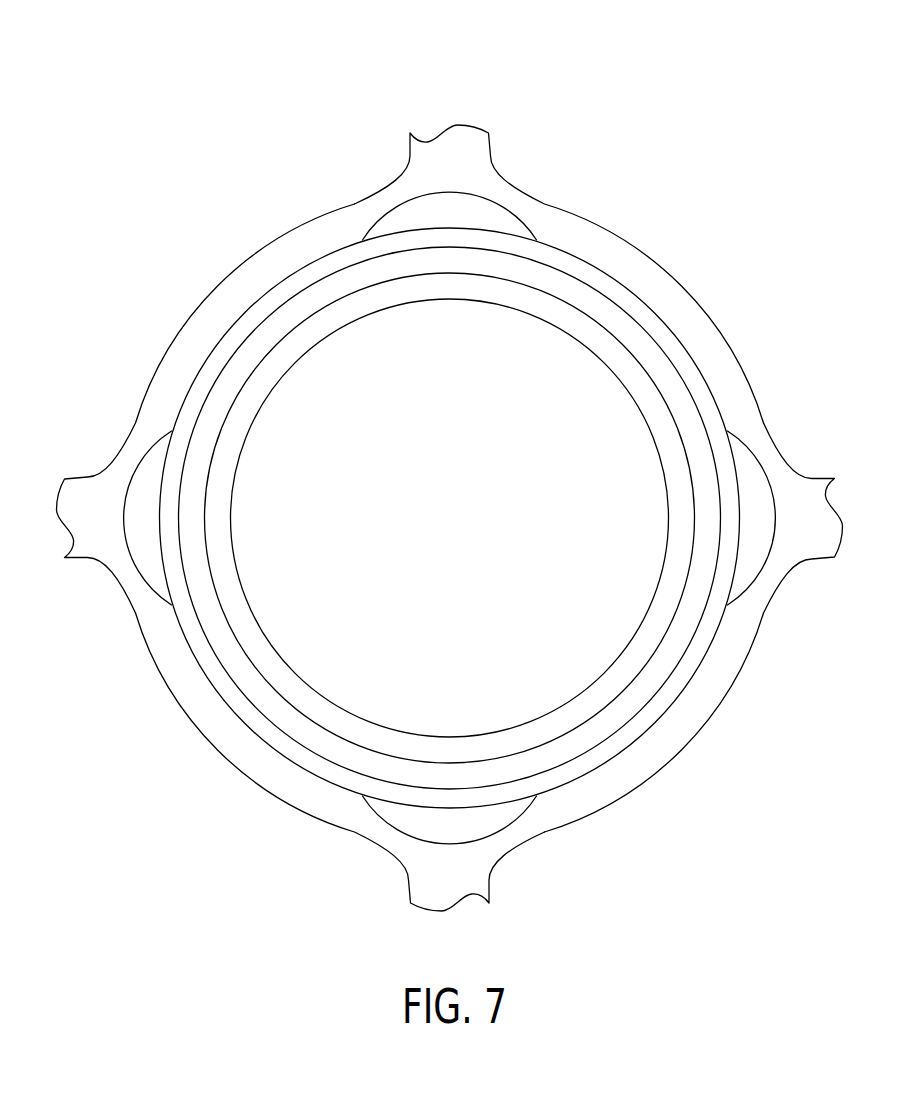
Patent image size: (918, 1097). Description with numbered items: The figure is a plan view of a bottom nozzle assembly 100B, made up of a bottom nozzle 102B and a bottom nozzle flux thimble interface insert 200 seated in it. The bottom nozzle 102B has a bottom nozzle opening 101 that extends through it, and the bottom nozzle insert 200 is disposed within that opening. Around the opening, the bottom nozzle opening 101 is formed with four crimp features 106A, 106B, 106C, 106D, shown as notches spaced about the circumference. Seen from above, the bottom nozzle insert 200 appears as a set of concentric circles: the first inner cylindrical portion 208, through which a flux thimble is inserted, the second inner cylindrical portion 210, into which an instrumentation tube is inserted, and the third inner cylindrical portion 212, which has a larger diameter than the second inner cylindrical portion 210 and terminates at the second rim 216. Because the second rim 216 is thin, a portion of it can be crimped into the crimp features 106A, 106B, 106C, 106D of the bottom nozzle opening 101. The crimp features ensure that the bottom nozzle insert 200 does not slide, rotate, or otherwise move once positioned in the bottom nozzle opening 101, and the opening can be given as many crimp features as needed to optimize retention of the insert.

The bottom nozzle assembly 100B is at (756, 102).
The bottom nozzle opening 101 is at (236, 743).
The bottom nozzle 102B is at (293, 240).
The crimp feature 106A is at (197, 408).
The crimp feature 106B is at (715, 608).
The crimp feature 106C is at (559, 269).
The crimp feature 106D is at (386, 769).
The bottom nozzle flux thimble interface insert 200 is at (546, 349).
The first inner cylindrical portion 208 is at (650, 418).
The second inner cylindrical portion 210 is at (627, 347).
The third inner cylindrical portion 212 is at (598, 290).
The second rim 216 is at (557, 263).